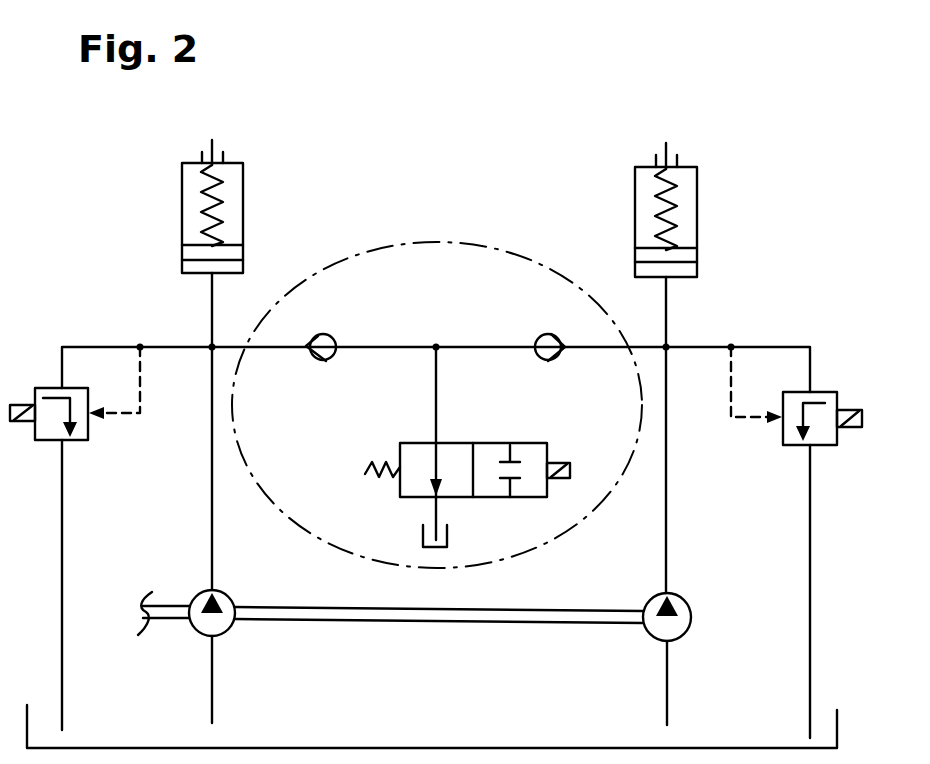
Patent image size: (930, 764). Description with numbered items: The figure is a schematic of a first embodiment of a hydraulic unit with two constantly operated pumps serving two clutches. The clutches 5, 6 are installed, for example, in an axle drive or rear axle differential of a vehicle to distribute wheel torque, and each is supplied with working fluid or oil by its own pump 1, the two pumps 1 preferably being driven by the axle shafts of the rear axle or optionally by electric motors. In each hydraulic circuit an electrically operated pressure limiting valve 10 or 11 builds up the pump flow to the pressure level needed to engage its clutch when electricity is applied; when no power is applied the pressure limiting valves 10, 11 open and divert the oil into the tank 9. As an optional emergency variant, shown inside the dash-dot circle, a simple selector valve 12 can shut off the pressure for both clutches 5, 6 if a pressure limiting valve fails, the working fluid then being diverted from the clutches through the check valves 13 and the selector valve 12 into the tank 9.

The pump 1 is at (218, 627).
The clutch 5 is at (645, 197).
The clutch 6 is at (232, 200).
The tank 9 is at (447, 537).
The pressure limiting valve 10 is at (825, 397).
The pressure limiting valve 11 is at (44, 392).
The selector valve 12 is at (488, 453).
The check valve 13 is at (322, 343).